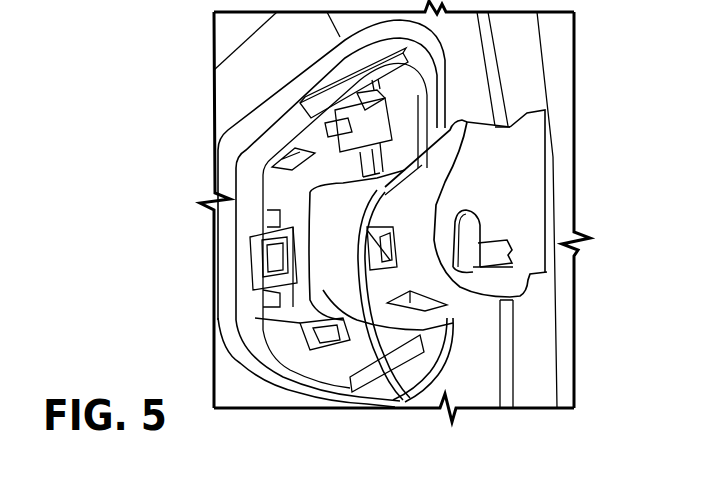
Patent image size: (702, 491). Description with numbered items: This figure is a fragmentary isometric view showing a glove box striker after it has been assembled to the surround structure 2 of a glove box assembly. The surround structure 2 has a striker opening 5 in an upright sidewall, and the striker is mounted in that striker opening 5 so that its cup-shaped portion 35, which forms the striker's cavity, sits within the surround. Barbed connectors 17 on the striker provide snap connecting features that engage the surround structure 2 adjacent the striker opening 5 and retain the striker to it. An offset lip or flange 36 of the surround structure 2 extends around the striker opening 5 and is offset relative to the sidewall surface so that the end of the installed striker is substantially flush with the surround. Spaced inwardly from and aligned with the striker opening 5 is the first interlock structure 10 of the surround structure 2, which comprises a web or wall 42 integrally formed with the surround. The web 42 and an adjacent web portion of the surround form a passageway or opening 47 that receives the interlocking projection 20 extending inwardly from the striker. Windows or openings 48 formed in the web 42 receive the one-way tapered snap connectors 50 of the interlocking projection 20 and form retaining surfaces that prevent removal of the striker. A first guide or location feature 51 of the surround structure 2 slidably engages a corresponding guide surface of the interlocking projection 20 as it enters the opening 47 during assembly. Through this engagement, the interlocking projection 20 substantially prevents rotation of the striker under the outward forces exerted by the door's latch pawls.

The surround structure 2 is at (238, 88).
The striker opening 5 is at (288, 377).
The first interlock structure 10 is at (479, 321).
The barbed connectors 17 is at (380, 95).
The interlocking projection 20 is at (482, 221).
The cup-shaped portion 35 is at (290, 312).
The offset lip or flange 36 is at (265, 153).
The web or wall 42 is at (458, 153).
The passageway or opening 47 is at (517, 183).
The windows or openings 48 is at (417, 355).
The one-way tapered snap connectors 50 is at (390, 336).
The first guide or location feature 51 is at (505, 240).